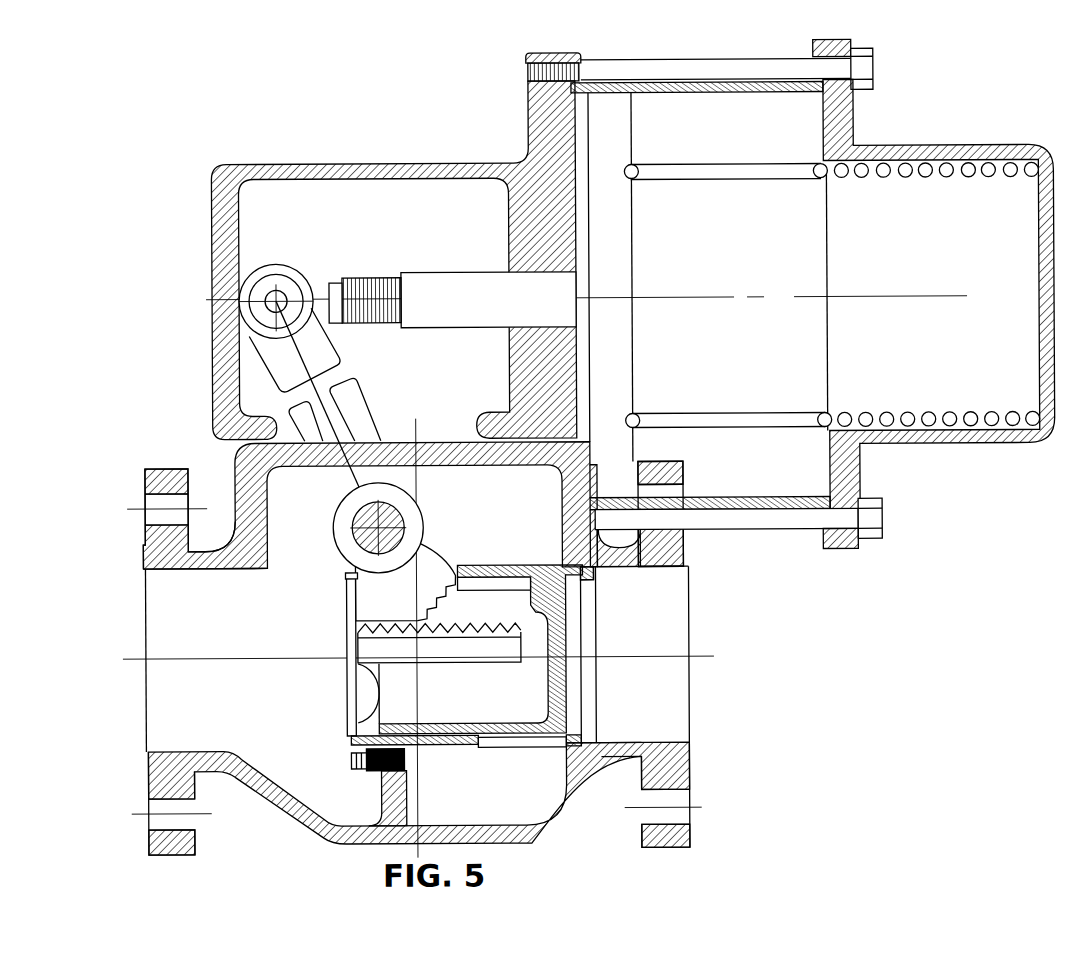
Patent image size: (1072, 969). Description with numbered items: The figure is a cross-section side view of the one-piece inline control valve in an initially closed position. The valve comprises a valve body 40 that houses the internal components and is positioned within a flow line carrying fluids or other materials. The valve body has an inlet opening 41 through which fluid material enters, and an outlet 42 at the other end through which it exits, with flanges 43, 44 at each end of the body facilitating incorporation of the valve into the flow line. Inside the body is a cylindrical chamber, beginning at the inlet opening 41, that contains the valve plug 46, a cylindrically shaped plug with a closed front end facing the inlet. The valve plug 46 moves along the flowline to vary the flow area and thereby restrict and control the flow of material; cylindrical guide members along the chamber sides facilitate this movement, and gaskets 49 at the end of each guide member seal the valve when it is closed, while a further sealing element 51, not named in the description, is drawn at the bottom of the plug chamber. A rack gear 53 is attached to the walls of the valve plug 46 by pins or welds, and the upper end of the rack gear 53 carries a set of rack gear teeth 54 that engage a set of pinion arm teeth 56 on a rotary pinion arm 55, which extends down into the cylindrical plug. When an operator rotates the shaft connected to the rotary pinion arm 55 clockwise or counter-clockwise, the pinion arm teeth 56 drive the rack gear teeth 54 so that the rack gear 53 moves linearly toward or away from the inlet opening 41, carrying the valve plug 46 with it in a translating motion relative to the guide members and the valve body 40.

The valve body 40 is at (232, 492).
The inlet opening 41 is at (668, 627).
The outlet 42 is at (180, 615).
The flange 43 is at (688, 770).
The flange 44 is at (147, 762).
The valve plug 46 is at (567, 672).
The gaskets 49 is at (578, 585).
The valve seat 51 is at (565, 735).
The rack gear 53 is at (347, 712).
The rack gear teeth 54 is at (355, 632).
The rotary pinion arm 55 is at (350, 583).
The pinion arm teeth 56 is at (420, 613).